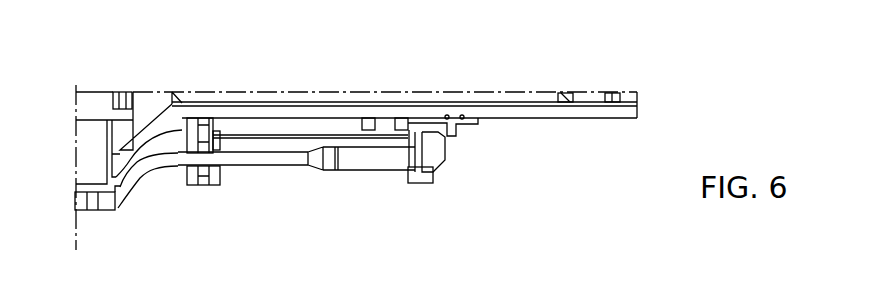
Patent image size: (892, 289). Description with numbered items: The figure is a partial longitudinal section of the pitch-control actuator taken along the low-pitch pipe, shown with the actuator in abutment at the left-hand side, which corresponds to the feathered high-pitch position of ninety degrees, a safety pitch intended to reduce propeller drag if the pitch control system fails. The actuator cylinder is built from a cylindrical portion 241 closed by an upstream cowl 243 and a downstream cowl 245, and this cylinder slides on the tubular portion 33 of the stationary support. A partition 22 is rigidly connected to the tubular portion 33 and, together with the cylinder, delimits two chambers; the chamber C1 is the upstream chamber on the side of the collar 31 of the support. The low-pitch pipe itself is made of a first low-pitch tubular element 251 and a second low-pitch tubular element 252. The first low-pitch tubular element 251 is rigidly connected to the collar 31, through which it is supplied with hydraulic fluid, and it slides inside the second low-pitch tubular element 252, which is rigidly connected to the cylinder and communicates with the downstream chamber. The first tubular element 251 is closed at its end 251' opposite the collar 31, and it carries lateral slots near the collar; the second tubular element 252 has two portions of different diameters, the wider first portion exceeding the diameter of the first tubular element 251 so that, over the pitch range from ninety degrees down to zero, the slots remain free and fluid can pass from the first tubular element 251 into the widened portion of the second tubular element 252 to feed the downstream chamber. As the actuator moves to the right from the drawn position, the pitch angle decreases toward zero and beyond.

The partition 22 is at (385, 123).
The tubular portion 33 is at (588, 116).
The cylindrical portion 241 is at (294, 116).
The chamber C1 is at (255, 128).
The upstream cowl 243 is at (202, 140).
The downstream cowl 245 is at (457, 123).
The second low-pitch tubular element 252 is at (388, 170).
The first low-pitch tubular element 251 is at (175, 180).
The end of the first tubular element 251' is at (156, 223).
The collar 31 is at (98, 212).